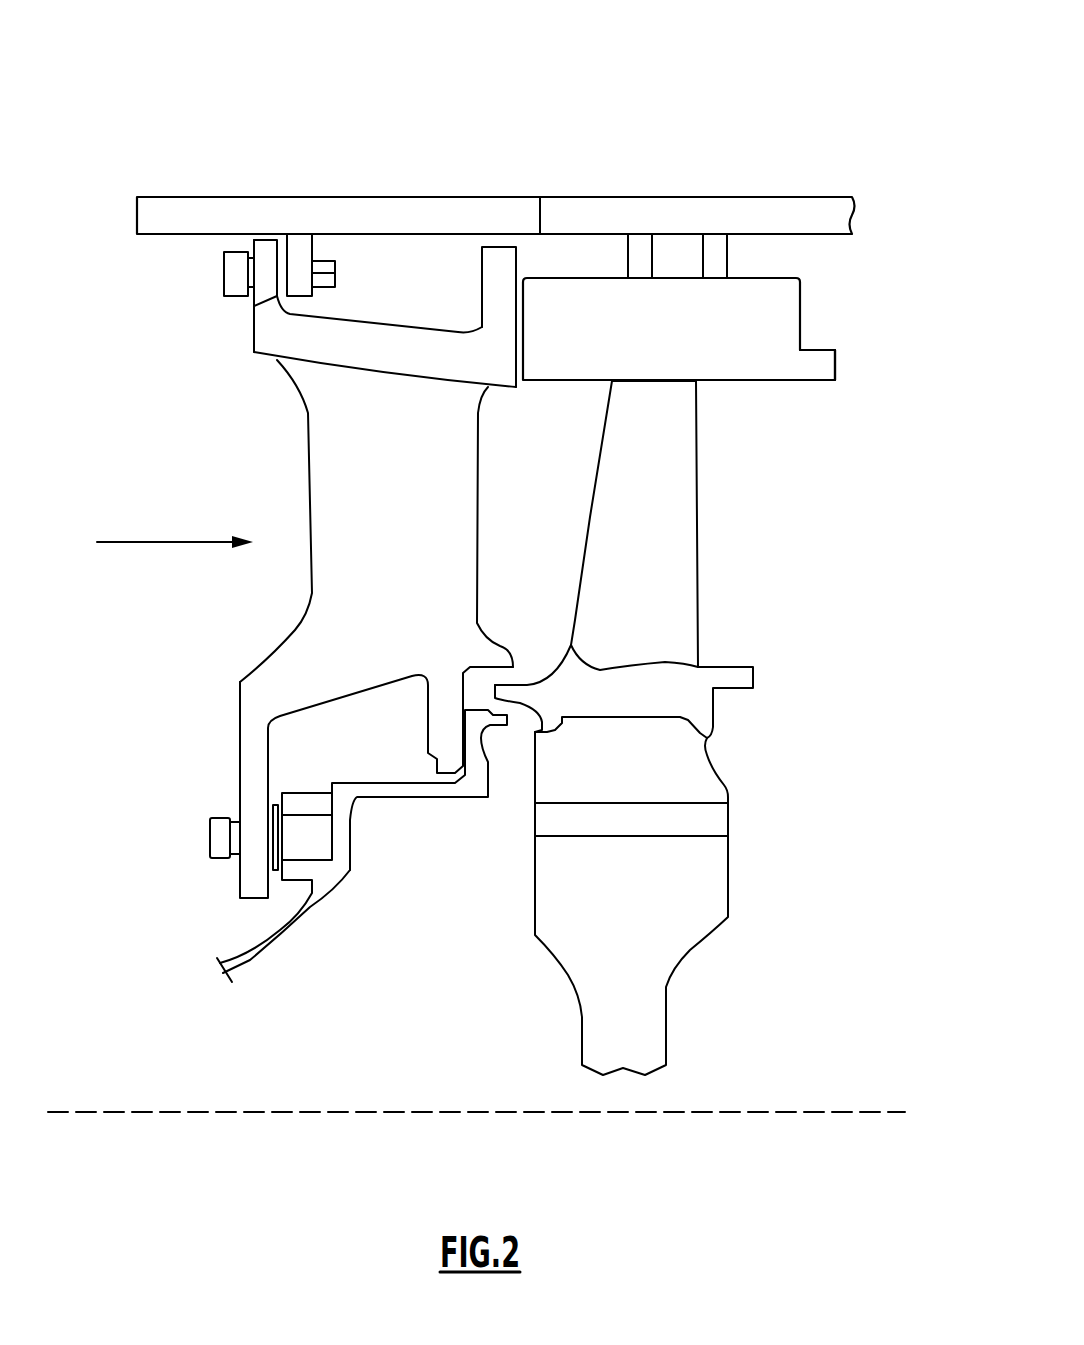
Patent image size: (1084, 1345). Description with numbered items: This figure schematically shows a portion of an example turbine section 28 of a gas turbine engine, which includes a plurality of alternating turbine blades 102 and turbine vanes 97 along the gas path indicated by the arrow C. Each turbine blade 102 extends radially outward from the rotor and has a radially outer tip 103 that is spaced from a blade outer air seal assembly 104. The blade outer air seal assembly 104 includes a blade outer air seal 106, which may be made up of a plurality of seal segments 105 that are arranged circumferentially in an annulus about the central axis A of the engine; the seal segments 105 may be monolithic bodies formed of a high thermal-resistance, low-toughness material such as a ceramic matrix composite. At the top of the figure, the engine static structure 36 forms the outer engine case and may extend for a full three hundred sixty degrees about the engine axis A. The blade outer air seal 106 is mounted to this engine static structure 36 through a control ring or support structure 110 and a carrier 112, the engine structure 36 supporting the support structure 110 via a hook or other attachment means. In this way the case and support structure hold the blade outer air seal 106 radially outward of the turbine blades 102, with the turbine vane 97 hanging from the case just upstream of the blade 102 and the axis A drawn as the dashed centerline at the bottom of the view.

The turbine section 28 is at (780, 84).
The engine static structure 36 is at (202, 215).
The turbine vane 97 is at (485, 360).
The turbine blade 102 is at (683, 503).
The radially outer tip 103 is at (676, 383).
The blade outer air seal assembly 104 is at (852, 298).
The seal segment 105 is at (822, 358).
The blade outer air seal 106 is at (820, 368).
The support structure 110 is at (585, 210).
The carrier 112 is at (642, 258).
The core flow path C is at (128, 542).
The central axis A is at (848, 1112).